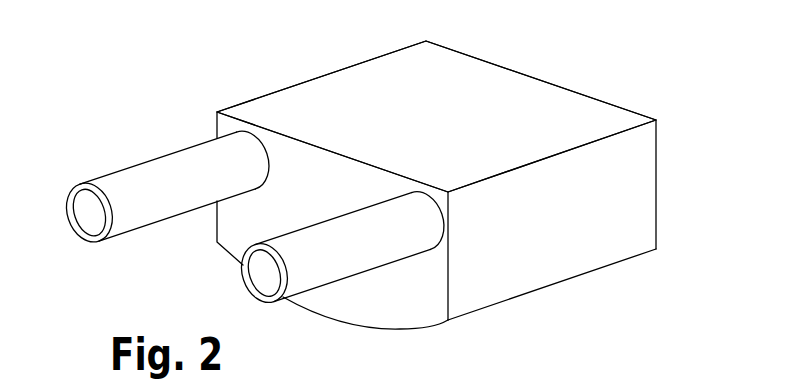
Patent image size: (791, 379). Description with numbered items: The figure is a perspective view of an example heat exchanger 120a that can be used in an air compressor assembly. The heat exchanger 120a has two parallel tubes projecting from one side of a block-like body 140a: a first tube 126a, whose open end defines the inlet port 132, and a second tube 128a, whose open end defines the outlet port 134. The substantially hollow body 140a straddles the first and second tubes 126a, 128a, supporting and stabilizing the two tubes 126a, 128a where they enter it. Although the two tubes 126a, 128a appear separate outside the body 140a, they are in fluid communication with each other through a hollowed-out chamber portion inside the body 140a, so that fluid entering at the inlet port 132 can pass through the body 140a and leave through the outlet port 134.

The heat exchanger 120a is at (551, 38).
The first tube 126a is at (160, 185).
The second tube 128a is at (310, 232).
The inlet port 132 is at (88, 212).
The outlet port 134 is at (262, 270).
The body 140a is at (495, 107).